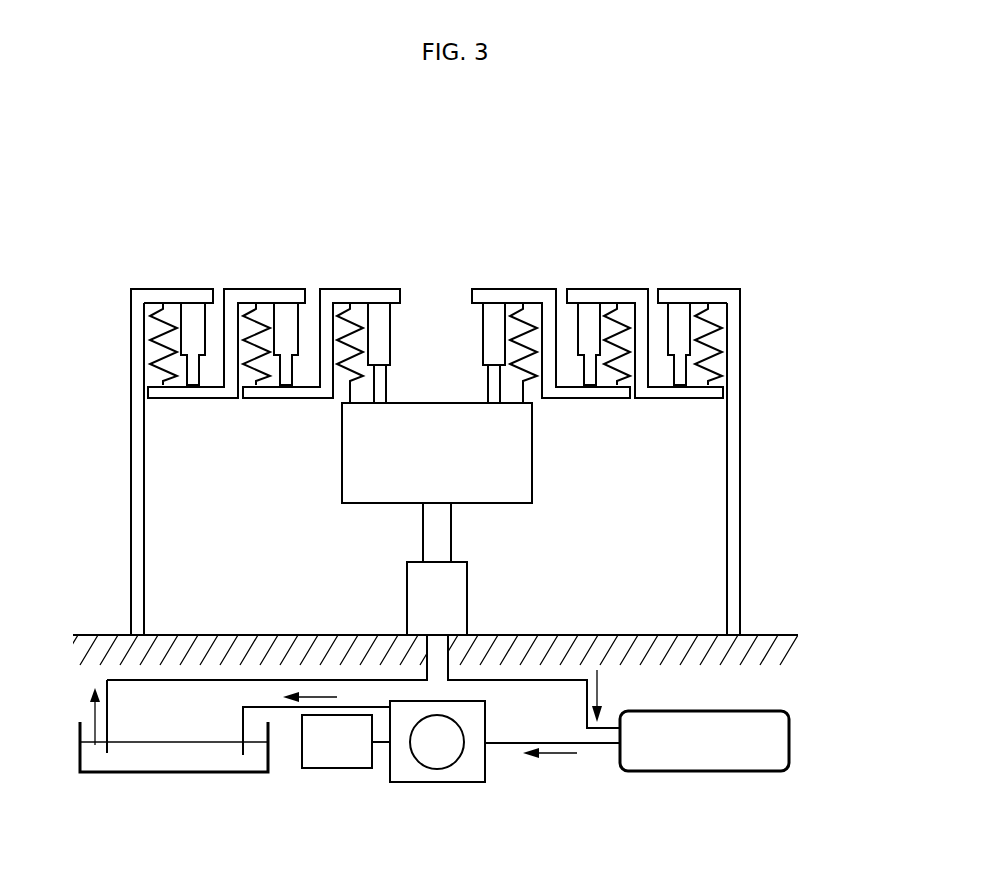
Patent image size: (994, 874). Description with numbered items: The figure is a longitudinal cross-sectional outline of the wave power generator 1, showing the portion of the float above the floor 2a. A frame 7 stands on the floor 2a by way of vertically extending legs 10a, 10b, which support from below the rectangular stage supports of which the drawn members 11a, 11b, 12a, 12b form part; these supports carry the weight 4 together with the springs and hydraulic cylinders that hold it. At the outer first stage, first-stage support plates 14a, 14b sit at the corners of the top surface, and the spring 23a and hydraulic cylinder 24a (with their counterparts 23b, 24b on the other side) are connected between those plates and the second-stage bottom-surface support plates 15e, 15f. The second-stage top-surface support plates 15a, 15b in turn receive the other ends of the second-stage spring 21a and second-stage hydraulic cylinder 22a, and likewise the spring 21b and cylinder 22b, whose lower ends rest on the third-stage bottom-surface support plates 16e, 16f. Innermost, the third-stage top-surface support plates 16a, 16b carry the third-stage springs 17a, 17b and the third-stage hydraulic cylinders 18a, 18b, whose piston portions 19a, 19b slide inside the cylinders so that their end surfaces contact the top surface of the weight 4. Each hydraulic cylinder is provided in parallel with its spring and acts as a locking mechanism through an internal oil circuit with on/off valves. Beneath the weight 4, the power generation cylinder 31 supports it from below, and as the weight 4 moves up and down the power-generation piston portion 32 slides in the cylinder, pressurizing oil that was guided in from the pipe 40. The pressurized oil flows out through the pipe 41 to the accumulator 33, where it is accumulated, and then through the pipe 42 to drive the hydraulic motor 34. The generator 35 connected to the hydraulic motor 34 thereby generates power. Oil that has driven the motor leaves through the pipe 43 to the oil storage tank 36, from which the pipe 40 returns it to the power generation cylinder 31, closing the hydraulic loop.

The wave power generator 1 is at (786, 190).
The floor 2a is at (783, 645).
The weight 4 is at (533, 490).
The frame 7 is at (758, 292).
The leg 10a is at (741, 490).
The leg 10b is at (131, 512).
The support 11a is at (640, 298).
The support 11b is at (232, 300).
The support 12a is at (553, 292).
The support 12b is at (323, 298).
The first-stage support plate 14a is at (705, 296).
The first-stage support plate 14b is at (160, 295).
The second-stage top-surface support plate 15a is at (583, 296).
The second-stage top-surface support plate 15b is at (280, 296).
The second-stage bottom-surface support plate 15e is at (687, 395).
The second-stage bottom-surface support plate 15f is at (177, 392).
The third-stage top-surface support plate 16a is at (487, 291).
The third-stage top-surface support plate 16b is at (380, 296).
The third-stage bottom-surface support plate 16e is at (617, 393).
The third-stage bottom-surface support plate 16f is at (302, 395).
The third-stage spring 17a is at (532, 299).
The third-stage spring 17b is at (358, 300).
The third-stage hydraulic cylinder 18a is at (490, 352).
The third-stage hydraulic cylinder 18b is at (388, 320).
The piston portion 19a is at (492, 403).
The piston portion 19b is at (380, 405).
The second-stage spring 21a is at (610, 298).
The second-stage spring 21b is at (265, 300).
The second-stage hydraulic cylinder 22a is at (583, 352).
The second-stage hydraulic cylinder 22b is at (285, 382).
The spring 23a is at (722, 340).
The spring 23b is at (155, 333).
The hydraulic cylinder 24a is at (680, 298).
The hydraulic cylinder 24b is at (193, 380).
The power generation cylinder 31 is at (468, 600).
The power-generation piston portion 32 is at (452, 535).
The accumulator 33 is at (700, 772).
The hydraulic motor 34 is at (437, 785).
The generator 35 is at (335, 770).
The oil storage tank 36 is at (170, 773).
The pipe 40 is at (121, 716).
The pipe 41 is at (525, 680).
The pipe 42 is at (593, 745).
The pipe 43 is at (243, 725).